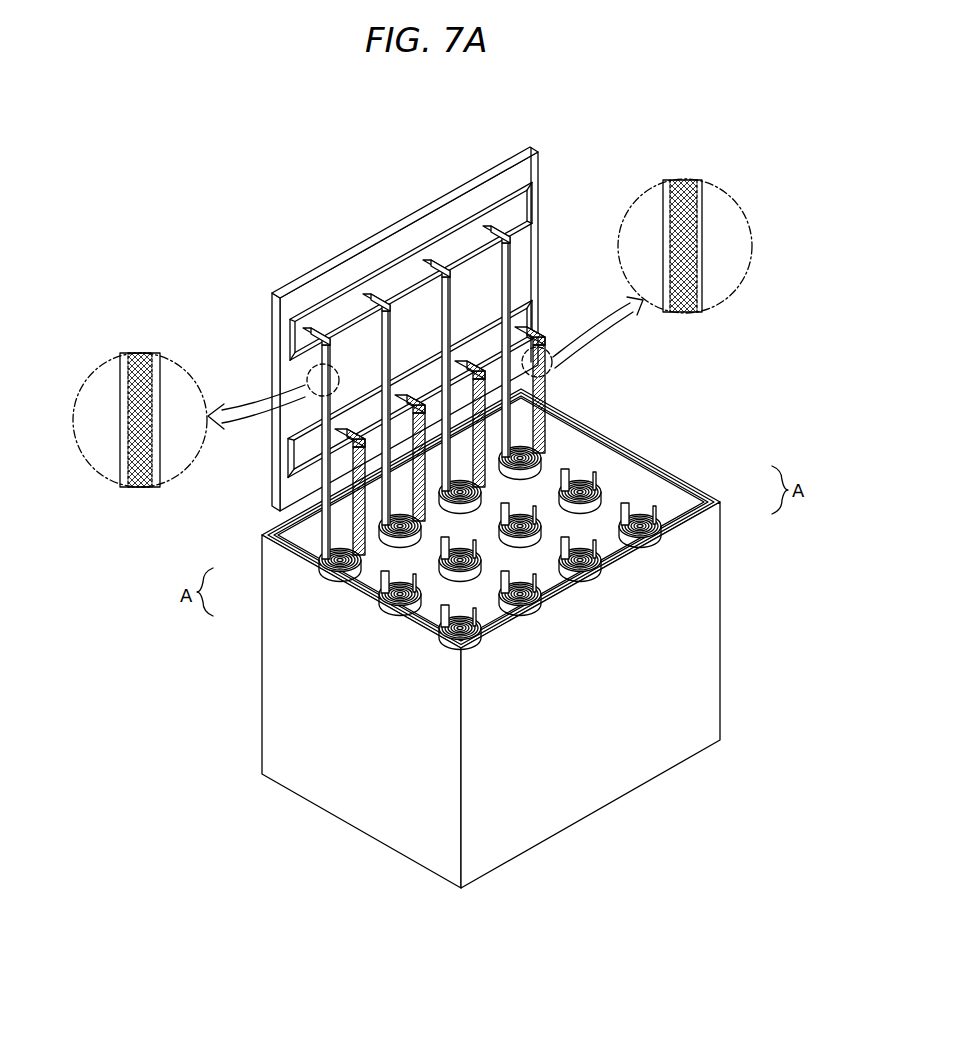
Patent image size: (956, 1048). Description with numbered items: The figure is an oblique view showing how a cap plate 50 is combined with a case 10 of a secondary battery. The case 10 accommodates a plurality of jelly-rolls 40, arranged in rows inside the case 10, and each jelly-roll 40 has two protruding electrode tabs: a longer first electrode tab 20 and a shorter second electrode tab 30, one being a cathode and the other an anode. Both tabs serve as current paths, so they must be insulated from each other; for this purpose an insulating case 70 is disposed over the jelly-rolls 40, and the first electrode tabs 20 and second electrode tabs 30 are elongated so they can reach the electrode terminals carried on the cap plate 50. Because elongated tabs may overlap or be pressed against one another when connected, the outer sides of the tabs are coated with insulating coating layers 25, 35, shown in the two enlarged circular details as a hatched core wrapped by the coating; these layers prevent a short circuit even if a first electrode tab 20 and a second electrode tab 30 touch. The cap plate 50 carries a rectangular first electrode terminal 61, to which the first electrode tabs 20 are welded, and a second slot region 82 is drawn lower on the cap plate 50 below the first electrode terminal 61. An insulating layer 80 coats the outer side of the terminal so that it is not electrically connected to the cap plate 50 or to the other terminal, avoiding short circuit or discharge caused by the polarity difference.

The case 10 is at (742, 592).
The first electrode tab 20 is at (140, 488).
The insulating coating layer 25 is at (157, 353).
The second electrode tab 30 is at (681, 313).
The insulating coating layer 35 is at (697, 182).
The jelly-roll 40 is at (616, 478).
The cap plate 50 is at (365, 218).
The first electrode terminal 61 is at (327, 321).
The insulating case 70 is at (355, 583).
The insulating layer 80 is at (537, 302).
The lower slot 82 is at (292, 466).